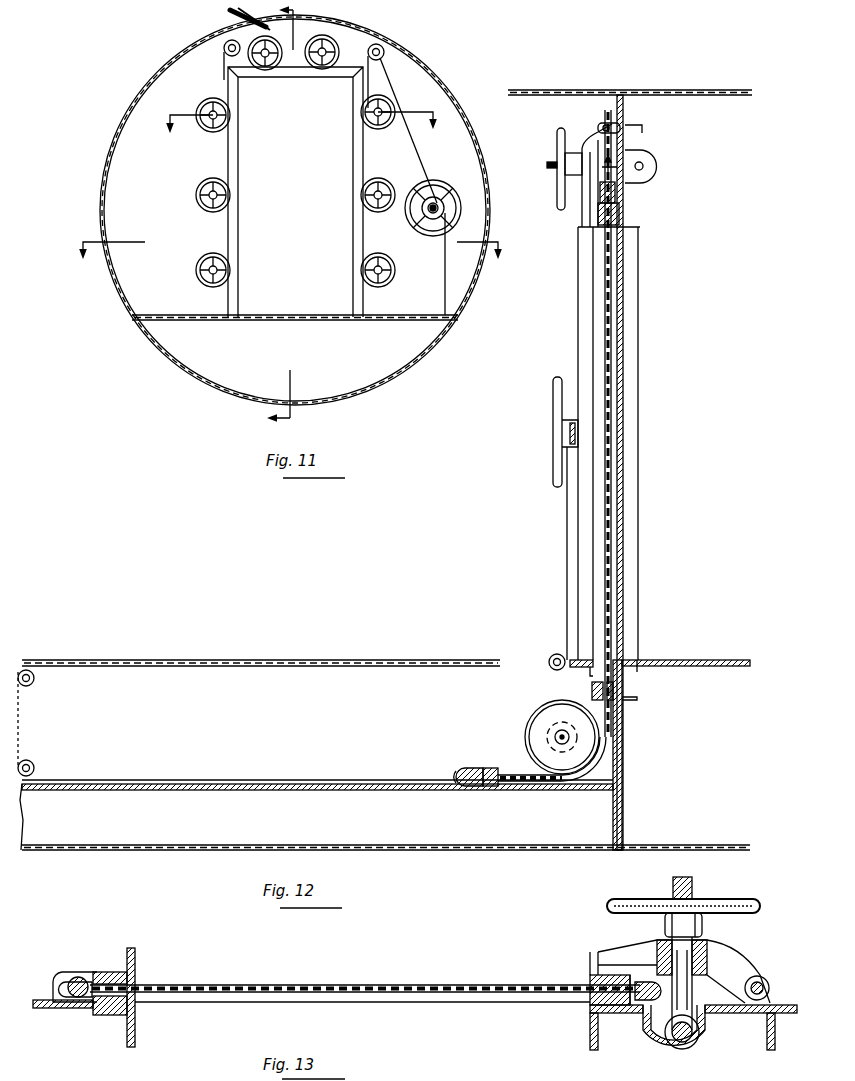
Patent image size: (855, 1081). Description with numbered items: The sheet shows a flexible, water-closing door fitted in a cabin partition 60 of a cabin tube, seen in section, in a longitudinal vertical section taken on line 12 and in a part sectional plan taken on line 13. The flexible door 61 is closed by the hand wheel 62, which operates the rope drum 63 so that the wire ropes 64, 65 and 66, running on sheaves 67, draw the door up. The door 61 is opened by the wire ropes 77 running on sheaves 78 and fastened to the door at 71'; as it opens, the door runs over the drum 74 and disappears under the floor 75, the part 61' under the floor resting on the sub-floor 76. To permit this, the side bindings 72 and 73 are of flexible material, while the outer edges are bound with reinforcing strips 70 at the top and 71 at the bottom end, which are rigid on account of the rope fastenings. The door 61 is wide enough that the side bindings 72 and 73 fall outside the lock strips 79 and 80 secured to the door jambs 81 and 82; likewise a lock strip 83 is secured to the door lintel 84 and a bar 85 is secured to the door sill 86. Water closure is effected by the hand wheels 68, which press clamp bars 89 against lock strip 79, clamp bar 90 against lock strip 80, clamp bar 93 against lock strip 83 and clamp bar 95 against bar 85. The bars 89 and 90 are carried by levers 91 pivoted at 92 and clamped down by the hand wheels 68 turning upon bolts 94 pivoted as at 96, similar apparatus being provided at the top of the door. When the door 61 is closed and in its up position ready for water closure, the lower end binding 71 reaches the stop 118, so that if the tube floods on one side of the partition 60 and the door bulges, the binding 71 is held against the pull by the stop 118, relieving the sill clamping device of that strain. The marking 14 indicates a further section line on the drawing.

In FIG. 11, the section line 12— 12 is at (293, 216).
In FIG. 11, the section line 13— 13 is at (300, 110).
In FIG. 11, the section line 14- 14 is at (290, 237).
In FIG. 11, the cabin partition 60 is at (172, 98).
In FIG. 11, the flexible door 61 is at (245, 76).
In FIG. 12, the flexible door 61 is at (648, 423).
In FIG. 13, the flexible door 61 is at (365, 964).
In FIG. 12, the part of door under the floor 61' is at (536, 781).
In FIG. 11, the hand wheel 62 is at (462, 210).
In FIG. 11, the rope drum 63 is at (441, 201).
In FIG. 11, the wire rope 64 is at (400, 82).
In FIG. 11, the wire rope 65 is at (355, 36).
In FIG. 11, the wire rope 66 is at (234, 19).
In FIG. 11, the sheave 67 is at (224, 45).
In FIG. 11, the hand wheel 68 is at (198, 202).
In FIG. 13, the hand wheel 68 is at (608, 903).
In FIG. 12, the reinforcing strip 70 is at (612, 196).
In FIG. 12, the reinforcing strip 71 is at (436, 743).
In FIG. 12, the rope fastening point 71' is at (424, 759).
In FIG. 13, the side binding 72 is at (70, 975).
In FIG. 13, the side binding 73 is at (645, 1002).
In FIG. 12, the drum 74 is at (527, 720).
In FIG. 12, the floor 75 is at (402, 659).
In FIG. 12, the sub-floor 76 is at (165, 792).
In FIG. 11, the wire rope 77 is at (446, 261).
In FIG. 12, the wire rope 77 is at (222, 668).
In FIG. 12, the sheave 78 is at (34, 681).
In FIG. 13, the lock strip 79 is at (130, 998).
In FIG. 13, the lock strip 80 is at (592, 1002).
In FIG. 11, the door jamb 81 is at (238, 160).
In FIG. 13, the door jamb 81 is at (134, 1047).
In FIG. 11, the door jamb 82 is at (353, 226).
In FIG. 13, the door jamb 82 is at (590, 1048).
In FIG. 12, the lock strip 83 is at (616, 214).
In FIG. 12, the door lintel 84 is at (640, 226).
In FIG. 12, the bar 85 is at (626, 693).
In FIG. 12, the door sill 86 is at (652, 661).
In FIG. 13, the clamp bar 89 is at (133, 948).
In FIG. 13, the clamp bar 90 is at (590, 968).
In FIG. 13, the lever 91 is at (625, 945).
In FIG. 13, the pivot 92 is at (758, 978).
In FIG. 12, the clamp bar 93 is at (597, 241).
In FIG. 13, the bolt 94 is at (692, 885).
In FIG. 12, the clamp bar 95 is at (593, 690).
In FIG. 13, the pivot 96 is at (692, 1034).
In FIG. 12, the stop 118 is at (486, 768).